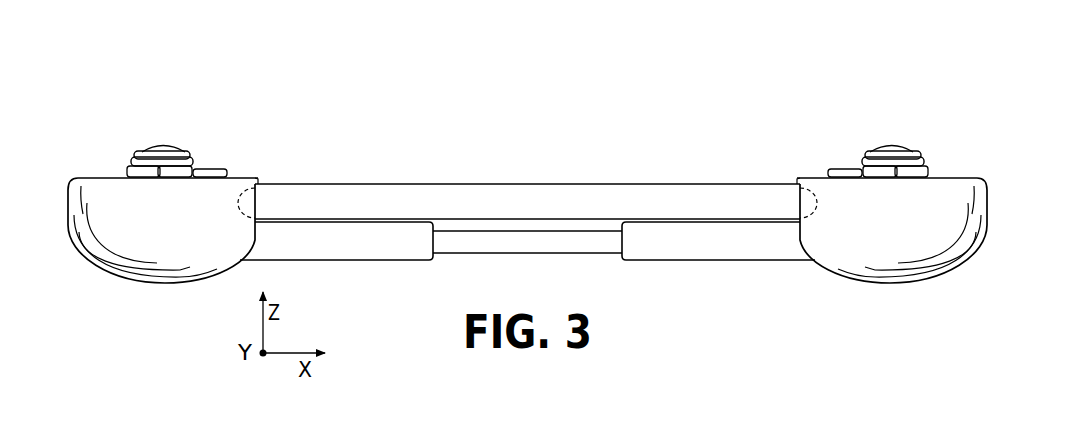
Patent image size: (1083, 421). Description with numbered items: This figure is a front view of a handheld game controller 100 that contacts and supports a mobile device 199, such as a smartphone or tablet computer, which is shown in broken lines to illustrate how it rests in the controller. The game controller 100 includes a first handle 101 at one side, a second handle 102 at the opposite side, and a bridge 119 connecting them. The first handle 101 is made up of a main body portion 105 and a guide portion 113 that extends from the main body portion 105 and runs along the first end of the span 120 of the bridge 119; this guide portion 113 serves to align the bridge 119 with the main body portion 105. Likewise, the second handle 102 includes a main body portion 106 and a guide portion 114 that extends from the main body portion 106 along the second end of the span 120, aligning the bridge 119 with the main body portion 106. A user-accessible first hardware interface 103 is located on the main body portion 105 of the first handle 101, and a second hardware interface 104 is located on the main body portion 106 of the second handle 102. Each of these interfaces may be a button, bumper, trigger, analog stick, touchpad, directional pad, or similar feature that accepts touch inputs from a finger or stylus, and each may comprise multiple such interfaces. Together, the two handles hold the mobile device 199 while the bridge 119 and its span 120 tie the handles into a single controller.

The game controller 100 is at (610, 100).
The first handle 101 is at (109, 154).
The second handle 102 is at (940, 152).
The first hardware interface 103 is at (210, 166).
The second hardware interface 104 is at (888, 147).
The main body portion 105 is at (160, 284).
The main body portion 106 is at (889, 284).
The guide portion 113 is at (345, 262).
The guide portion 114 is at (711, 262).
The bridge 119 is at (538, 255).
The span 120 is at (593, 275).
The mobile device 199 is at (528, 183).